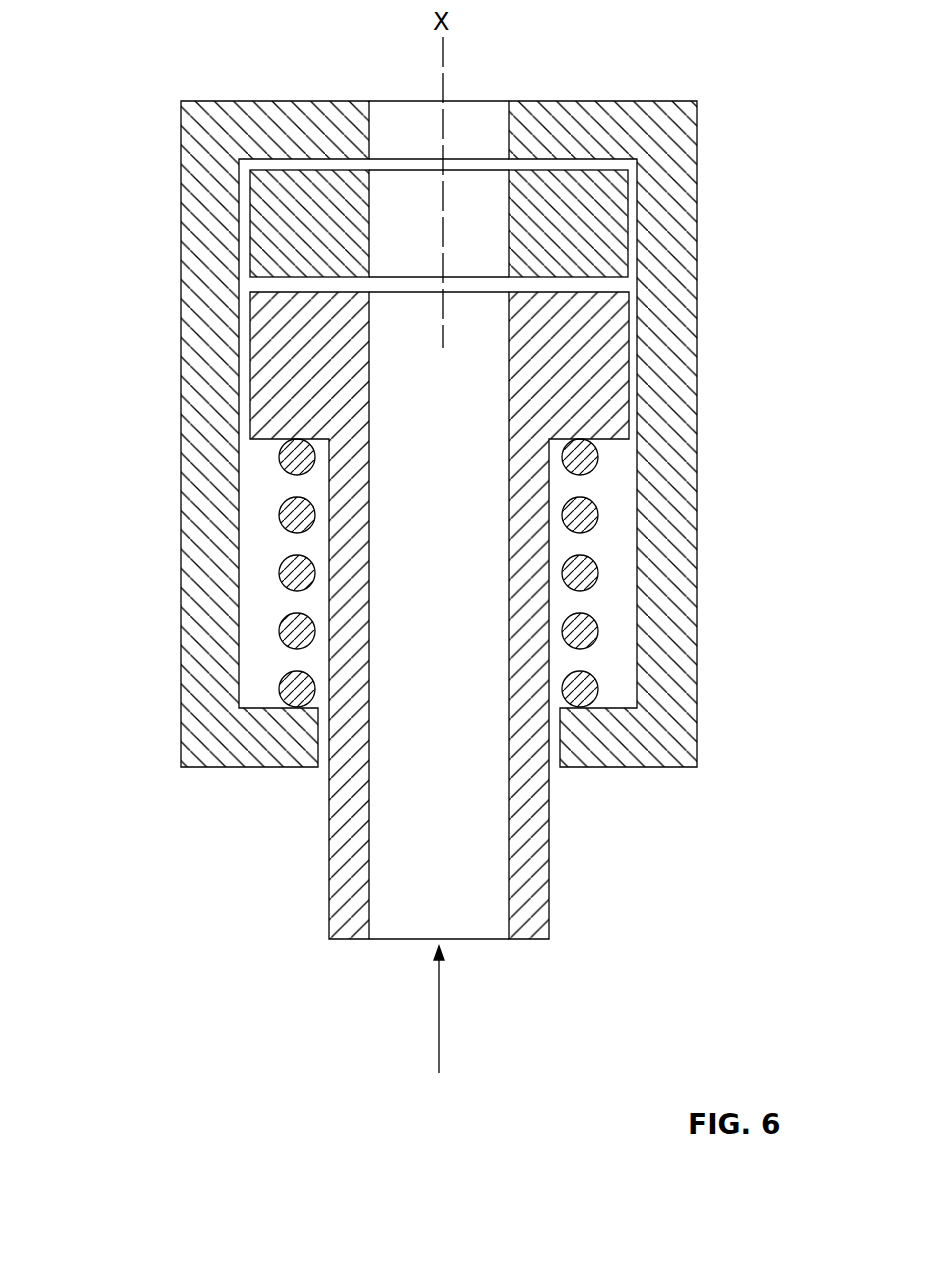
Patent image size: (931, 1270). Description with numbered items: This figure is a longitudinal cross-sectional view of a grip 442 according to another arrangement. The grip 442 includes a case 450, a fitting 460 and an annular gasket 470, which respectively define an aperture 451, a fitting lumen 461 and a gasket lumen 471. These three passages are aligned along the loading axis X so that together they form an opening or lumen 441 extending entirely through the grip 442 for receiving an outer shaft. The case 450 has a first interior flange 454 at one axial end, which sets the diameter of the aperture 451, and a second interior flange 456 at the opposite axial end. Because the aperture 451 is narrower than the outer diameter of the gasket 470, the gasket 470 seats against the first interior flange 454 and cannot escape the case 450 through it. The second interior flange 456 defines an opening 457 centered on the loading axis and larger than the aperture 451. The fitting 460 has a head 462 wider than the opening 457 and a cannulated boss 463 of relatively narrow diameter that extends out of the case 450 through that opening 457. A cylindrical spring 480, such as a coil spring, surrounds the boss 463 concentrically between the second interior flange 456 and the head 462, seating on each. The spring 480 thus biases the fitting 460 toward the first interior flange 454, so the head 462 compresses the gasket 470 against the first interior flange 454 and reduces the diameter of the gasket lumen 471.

The opening or lumen 441 is at (442, 1029).
The grip 442 is at (138, 91).
The case 450 is at (697, 363).
The aperture 451 is at (428, 147).
The first interior flange 454 is at (553, 100).
The second interior flange 456 is at (643, 768).
The opening 457 is at (323, 757).
The fitting 460 is at (387, 940).
The fitting lumen 461 is at (465, 504).
The head 462 is at (250, 248).
The cannulated boss 463 is at (550, 870).
The annular gasket 470 is at (553, 187).
The gasket lumen 471 is at (500, 247).
The cylindrical spring 480 is at (280, 637).